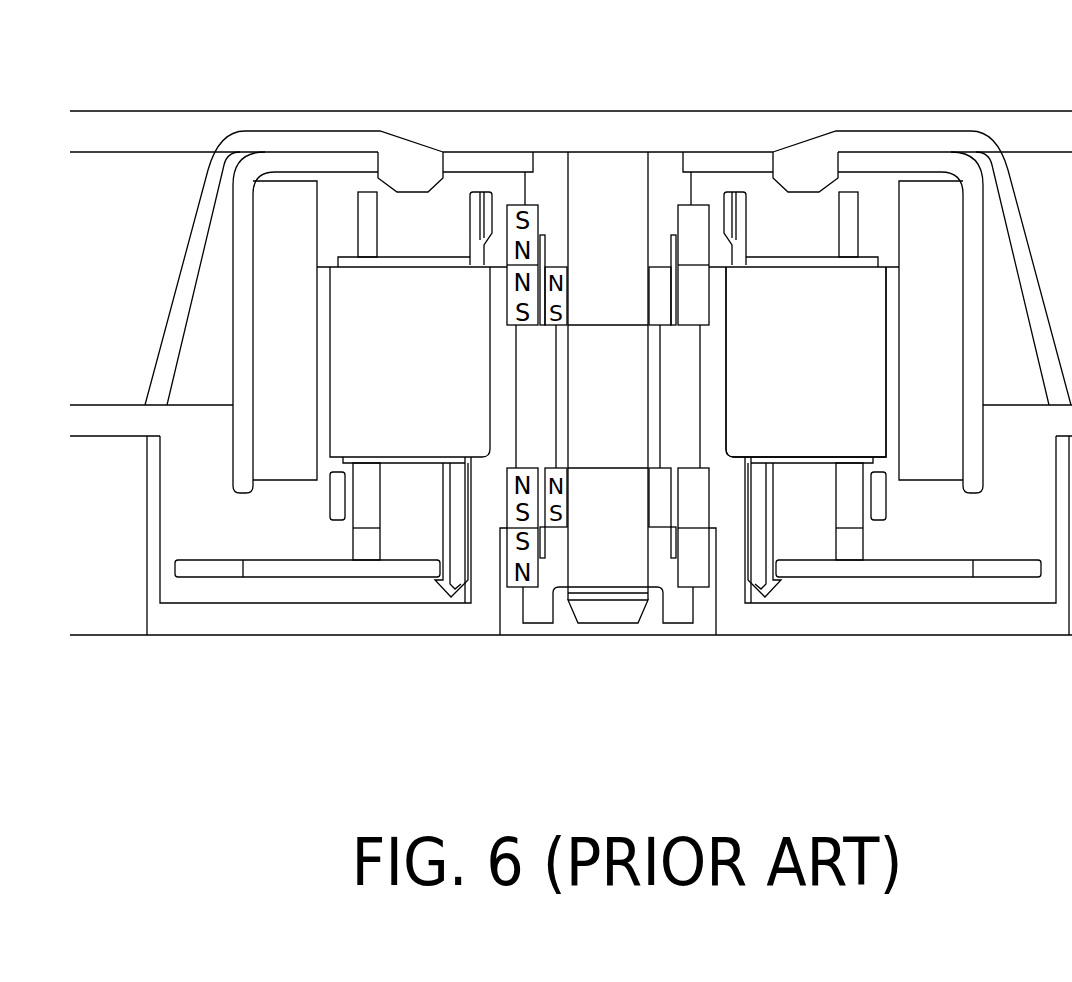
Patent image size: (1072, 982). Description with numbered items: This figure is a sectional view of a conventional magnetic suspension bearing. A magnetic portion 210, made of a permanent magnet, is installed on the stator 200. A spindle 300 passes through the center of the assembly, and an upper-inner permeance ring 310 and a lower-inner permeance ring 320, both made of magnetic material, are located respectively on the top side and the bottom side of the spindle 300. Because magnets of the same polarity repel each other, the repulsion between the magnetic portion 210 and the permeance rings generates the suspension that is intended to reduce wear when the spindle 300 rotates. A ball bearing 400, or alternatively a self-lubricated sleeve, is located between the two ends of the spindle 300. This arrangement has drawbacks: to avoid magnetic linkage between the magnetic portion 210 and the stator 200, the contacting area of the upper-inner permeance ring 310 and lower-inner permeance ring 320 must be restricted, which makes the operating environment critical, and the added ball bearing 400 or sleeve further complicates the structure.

The stator 200 is at (866, 300).
The magnetic portion 210 is at (703, 300).
The spindle 300 is at (595, 182).
The upper-inner permeance ring 310 is at (705, 217).
The lower-inner permeance ring 320 is at (663, 272).
The ball bearing 400 is at (682, 410).